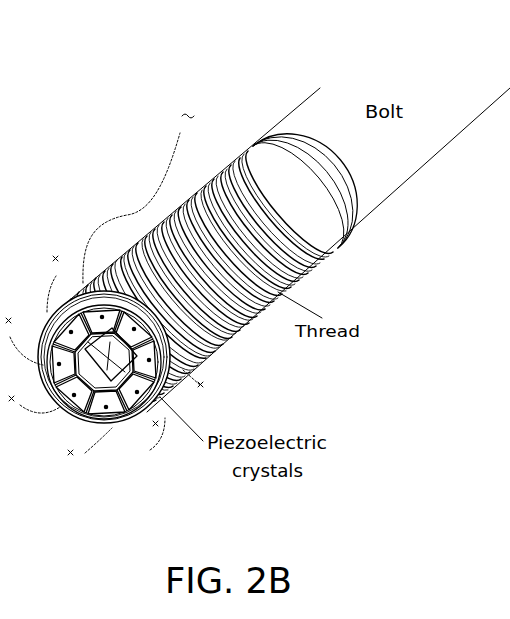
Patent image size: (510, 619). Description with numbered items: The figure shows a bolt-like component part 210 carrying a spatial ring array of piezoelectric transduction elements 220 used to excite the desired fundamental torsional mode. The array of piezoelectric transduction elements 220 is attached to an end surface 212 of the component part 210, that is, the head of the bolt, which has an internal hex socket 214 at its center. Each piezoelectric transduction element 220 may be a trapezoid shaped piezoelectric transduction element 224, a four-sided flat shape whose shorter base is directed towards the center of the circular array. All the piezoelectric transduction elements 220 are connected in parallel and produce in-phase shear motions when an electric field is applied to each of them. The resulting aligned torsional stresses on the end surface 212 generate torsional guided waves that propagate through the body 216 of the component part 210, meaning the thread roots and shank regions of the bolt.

The component part 210 is at (263, 111).
The end surface 212 is at (70, 311).
The internal hex socket 214 is at (112, 373).
The body 216 is at (382, 241).
The piezoelectric transduction element 220 is at (116, 412).
The trapezoid shaped piezoelectric transduction element 224 is at (116, 409).